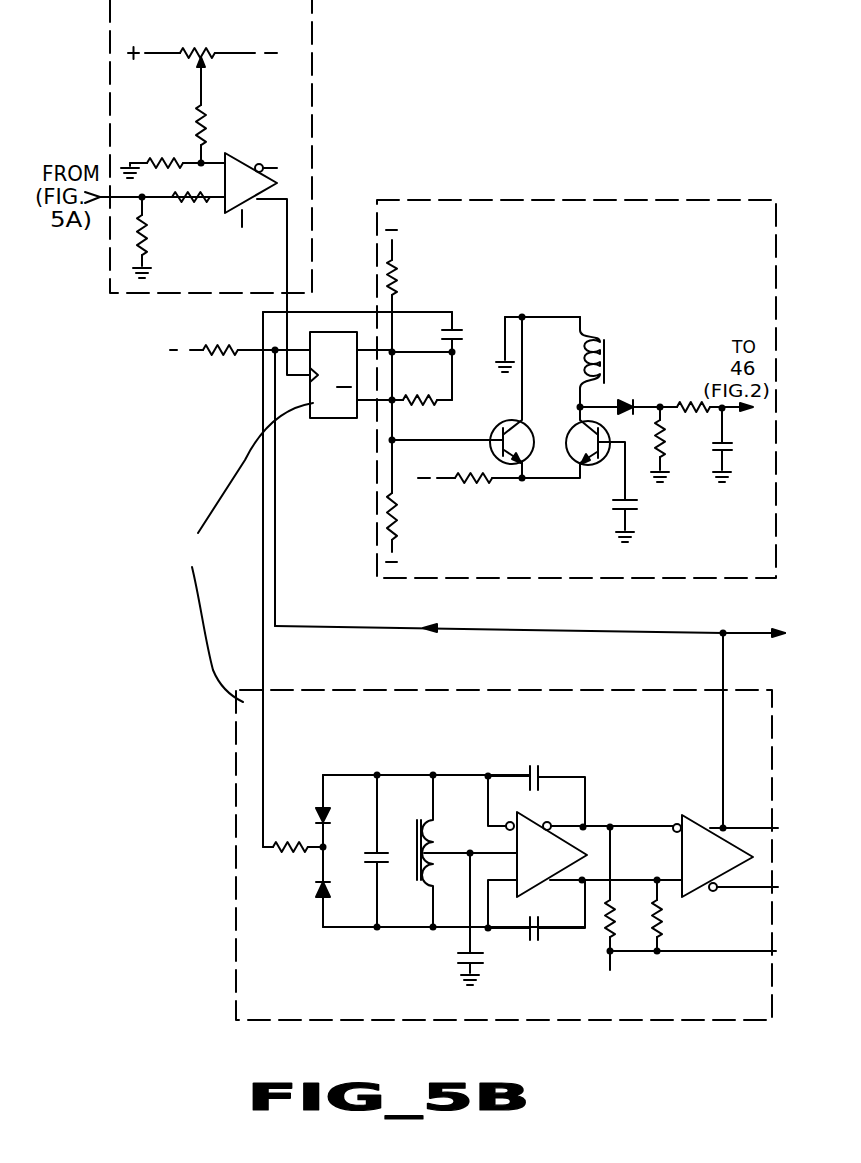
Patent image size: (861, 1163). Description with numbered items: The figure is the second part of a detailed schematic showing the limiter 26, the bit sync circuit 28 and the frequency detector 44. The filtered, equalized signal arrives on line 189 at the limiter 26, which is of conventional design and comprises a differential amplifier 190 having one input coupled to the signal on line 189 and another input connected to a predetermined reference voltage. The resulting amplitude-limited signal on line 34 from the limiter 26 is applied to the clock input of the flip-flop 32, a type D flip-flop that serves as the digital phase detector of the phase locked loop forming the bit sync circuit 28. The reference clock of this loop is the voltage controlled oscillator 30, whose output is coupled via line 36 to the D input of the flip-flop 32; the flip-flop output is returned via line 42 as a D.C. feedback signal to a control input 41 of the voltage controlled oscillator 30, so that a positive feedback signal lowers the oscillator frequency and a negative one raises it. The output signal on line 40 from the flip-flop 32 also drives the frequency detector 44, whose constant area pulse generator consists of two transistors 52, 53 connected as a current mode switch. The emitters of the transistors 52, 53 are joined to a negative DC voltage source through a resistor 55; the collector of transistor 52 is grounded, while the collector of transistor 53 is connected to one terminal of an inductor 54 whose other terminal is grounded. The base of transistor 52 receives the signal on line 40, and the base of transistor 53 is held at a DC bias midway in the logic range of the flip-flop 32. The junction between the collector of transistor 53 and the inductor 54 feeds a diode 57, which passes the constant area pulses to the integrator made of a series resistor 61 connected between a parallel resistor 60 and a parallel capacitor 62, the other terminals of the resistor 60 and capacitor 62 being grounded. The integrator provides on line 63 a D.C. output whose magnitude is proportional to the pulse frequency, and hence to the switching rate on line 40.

The limiter 26 is at (312, 18).
The line 189 is at (102, 200).
The differential amplifier 190 is at (242, 167).
The line 34 is at (287, 272).
The flip-flop 32 is at (327, 418).
The bit sync circuit 28 is at (245, 552).
The line 36 is at (275, 610).
The frequency detector 44 is at (672, 212).
The line 42 is at (435, 313).
The line 40 is at (432, 440).
The transistor 52 is at (513, 418).
The transistor 53 is at (573, 437).
The inductor 54 is at (610, 348).
The resistor 55 is at (473, 486).
The diode 57 is at (623, 397).
The series resistor 61 is at (690, 397).
The parallel resistor 60 is at (667, 447).
The parallel capacitor 62 is at (712, 457).
The line 63 is at (732, 413).
The voltage controlled oscillator 30 is at (485, 700).
The control input 41 is at (290, 841).